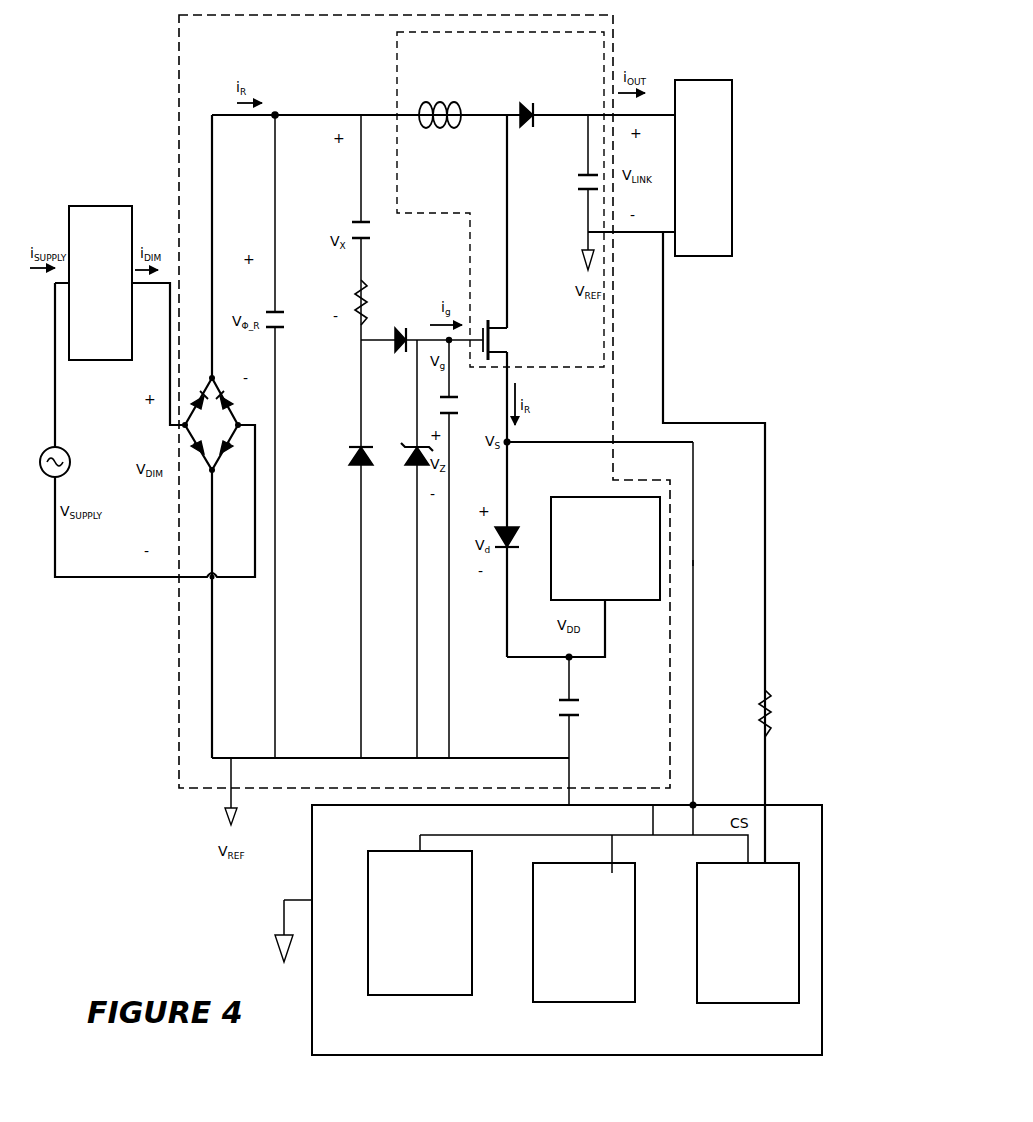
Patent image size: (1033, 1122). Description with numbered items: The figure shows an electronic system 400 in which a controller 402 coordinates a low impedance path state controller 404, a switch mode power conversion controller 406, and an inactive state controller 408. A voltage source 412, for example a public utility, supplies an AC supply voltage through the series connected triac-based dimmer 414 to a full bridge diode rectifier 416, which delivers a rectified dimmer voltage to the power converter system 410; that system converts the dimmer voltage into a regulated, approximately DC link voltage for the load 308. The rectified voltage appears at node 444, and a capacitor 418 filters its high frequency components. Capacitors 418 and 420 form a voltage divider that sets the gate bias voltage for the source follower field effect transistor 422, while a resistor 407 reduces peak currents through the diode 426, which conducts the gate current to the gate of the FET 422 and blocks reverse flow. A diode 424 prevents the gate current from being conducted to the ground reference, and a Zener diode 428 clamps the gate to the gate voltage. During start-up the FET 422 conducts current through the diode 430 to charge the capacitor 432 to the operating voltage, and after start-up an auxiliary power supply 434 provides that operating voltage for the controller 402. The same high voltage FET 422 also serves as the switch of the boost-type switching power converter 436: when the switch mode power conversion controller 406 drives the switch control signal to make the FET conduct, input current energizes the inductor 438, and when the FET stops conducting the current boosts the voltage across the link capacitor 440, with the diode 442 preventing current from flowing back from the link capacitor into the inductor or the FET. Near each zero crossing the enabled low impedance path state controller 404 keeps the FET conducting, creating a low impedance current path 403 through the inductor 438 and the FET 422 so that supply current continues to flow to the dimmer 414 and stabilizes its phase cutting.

The electronic system 400 is at (787, 128).
The controller 402 is at (785, 804).
The low impedance current path 403 is at (694, 563).
The low impedance path state controller 404 is at (420, 923).
The switch mode power conversion controller 406 is at (748, 933).
The resistor 407 is at (364, 287).
The inactive state controller 408 is at (584, 932).
The power converter system 410 is at (179, 97).
The voltage source 412 is at (70, 462).
The dimmer 414 is at (100, 283).
The full bridge diode rectifier 416 is at (212, 422).
The capacitor 418 is at (360, 220).
The capacitor 420 is at (452, 415).
The source follower field effect transistor 422 is at (483, 326).
The diode 424 is at (360, 462).
The diode 426 is at (395, 330).
The Zener diode 428 is at (416, 465).
The diode 430 is at (510, 528).
The capacitor 432 is at (572, 715).
The auxiliary power supply 434 is at (605, 548).
The boost-type switching power converter 436 is at (397, 78).
The inductor 438 is at (434, 101).
The link capacitor 440 is at (586, 189).
The diode 442 is at (533, 102).
The node 444 is at (275, 113).
The load 308 is at (703, 168).